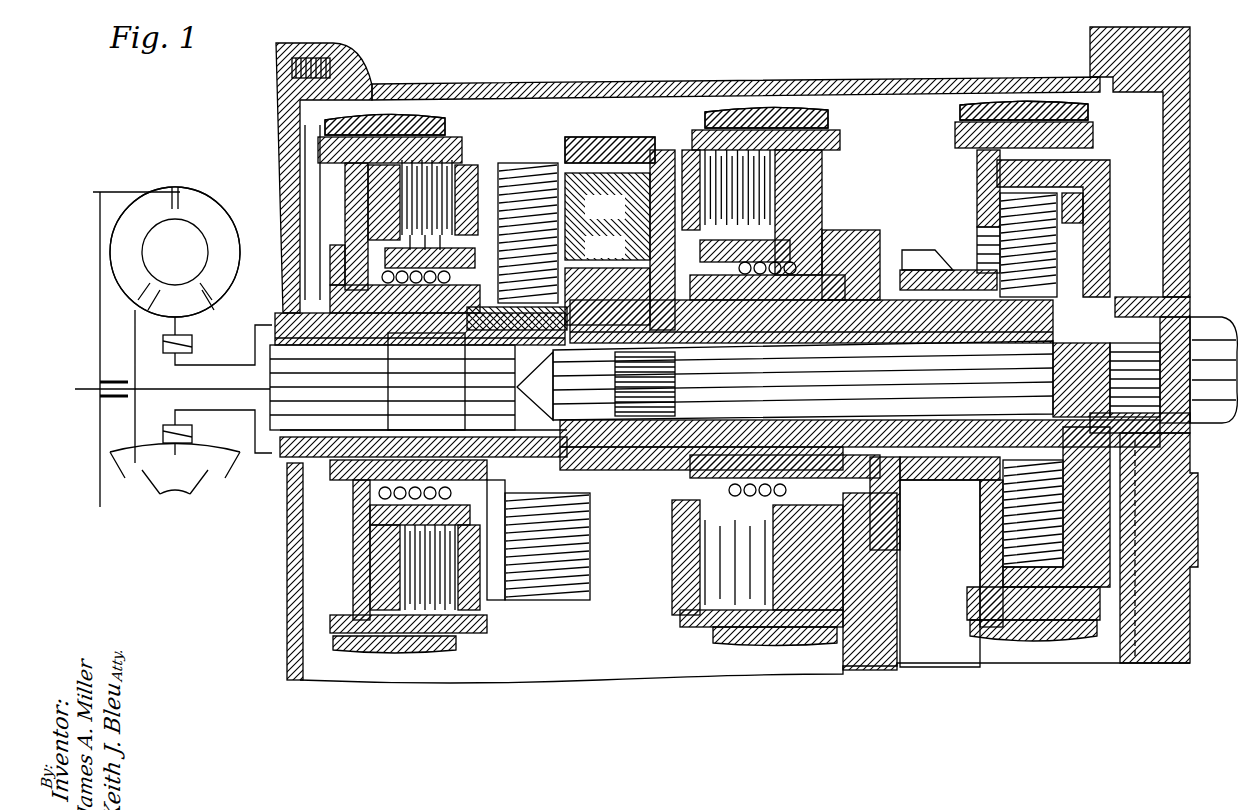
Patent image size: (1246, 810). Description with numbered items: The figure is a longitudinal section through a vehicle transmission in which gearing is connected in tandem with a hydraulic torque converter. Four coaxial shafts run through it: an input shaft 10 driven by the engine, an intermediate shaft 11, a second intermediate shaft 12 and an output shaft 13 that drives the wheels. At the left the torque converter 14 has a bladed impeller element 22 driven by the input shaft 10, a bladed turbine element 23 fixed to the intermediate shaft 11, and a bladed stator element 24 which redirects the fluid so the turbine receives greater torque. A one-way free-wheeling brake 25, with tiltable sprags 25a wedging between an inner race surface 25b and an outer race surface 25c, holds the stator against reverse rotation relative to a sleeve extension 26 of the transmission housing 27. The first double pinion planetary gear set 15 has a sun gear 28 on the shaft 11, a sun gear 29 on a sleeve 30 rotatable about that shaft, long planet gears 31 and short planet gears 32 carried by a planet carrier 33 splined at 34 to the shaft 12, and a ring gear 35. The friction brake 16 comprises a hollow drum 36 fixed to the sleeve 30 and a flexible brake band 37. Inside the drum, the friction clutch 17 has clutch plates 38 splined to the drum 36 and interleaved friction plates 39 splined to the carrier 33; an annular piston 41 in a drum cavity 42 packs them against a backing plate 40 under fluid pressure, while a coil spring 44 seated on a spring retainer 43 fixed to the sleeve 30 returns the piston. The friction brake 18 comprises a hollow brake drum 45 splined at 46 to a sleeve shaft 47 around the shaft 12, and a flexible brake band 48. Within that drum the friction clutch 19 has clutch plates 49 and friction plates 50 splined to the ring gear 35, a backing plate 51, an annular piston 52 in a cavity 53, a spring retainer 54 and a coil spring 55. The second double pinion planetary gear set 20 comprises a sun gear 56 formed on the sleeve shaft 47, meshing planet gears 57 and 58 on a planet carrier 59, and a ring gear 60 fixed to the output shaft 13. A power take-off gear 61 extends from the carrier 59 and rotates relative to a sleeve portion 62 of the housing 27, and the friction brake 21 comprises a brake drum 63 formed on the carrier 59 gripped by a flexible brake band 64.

The input shaft 10 is at (80, 386).
The intermediate shaft 11 is at (272, 394).
The second intermediate shaft 12 is at (905, 372).
The output shaft 13 is at (1216, 322).
The torque converter 14 is at (211, 195).
The first double pinion planetary gear set 15 is at (561, 121).
The friction brake 16 is at (400, 100).
The friction clutch 17 is at (437, 142).
The friction brake 18 is at (811, 95).
The friction clutch 19 is at (742, 128).
The second double pinion planetary gear set 20 is at (956, 170).
The friction brake 21 is at (1011, 92).
The impeller element 22 is at (225, 232).
The turbine element 23 is at (124, 236).
The stator element 24 is at (170, 292).
The one-way free-wheeling brake 25 is at (212, 349).
The tiltable sprags 25a is at (170, 365).
The inner cylindrical race surface 25b is at (168, 426).
The outer cylindrical race surface 25c is at (196, 434).
The sleeve extension 26 is at (262, 313).
The transmission housing 27 is at (340, 58).
The sun gear 28 is at (600, 268).
The sun gear 29 is at (516, 383).
The sleeve 30 is at (426, 381).
The long planet gears 31 is at (538, 606).
The short planet gears 32 is at (508, 165).
The planet carrier 33 is at (607, 216).
The spline 34 is at (652, 350).
The ring gear 35 is at (600, 158).
The hollow drum 36 is at (320, 150).
The flexible brake band 37 is at (286, 125).
The clutch plates 38 is at (345, 190).
The friction plates 39 is at (370, 213).
The backing plate 40 is at (470, 175).
The annular piston 41 is at (385, 235).
The drum cavity 42 is at (370, 570).
The spring retainer 43 is at (450, 490).
The coil spring 44 is at (345, 530).
The hollow brake drum 45 is at (830, 150).
The spline 46 is at (745, 345).
The sleeve shaft 47 is at (950, 332).
The flexible brake band 48 is at (706, 122).
The clutch plates 49 is at (805, 185).
The friction plates 50 is at (795, 198).
The backing plate 51 is at (706, 625).
The annular piston 52 is at (785, 580).
The cavity 53 is at (815, 228).
The spring retainer 54 is at (722, 526).
The coil spring 55 is at (757, 540).
The sun gear 56 is at (1036, 322).
The planet gears 57 is at (980, 204).
The planet gears 58 is at (1000, 547).
The planet carrier 59 is at (980, 218).
The ring gear 60 is at (1092, 170).
The power take-off gear 61 is at (936, 500).
The sleeve portion 62 is at (846, 318).
The brake drum 63 is at (1093, 134).
The flexible brake band 64 is at (962, 114).